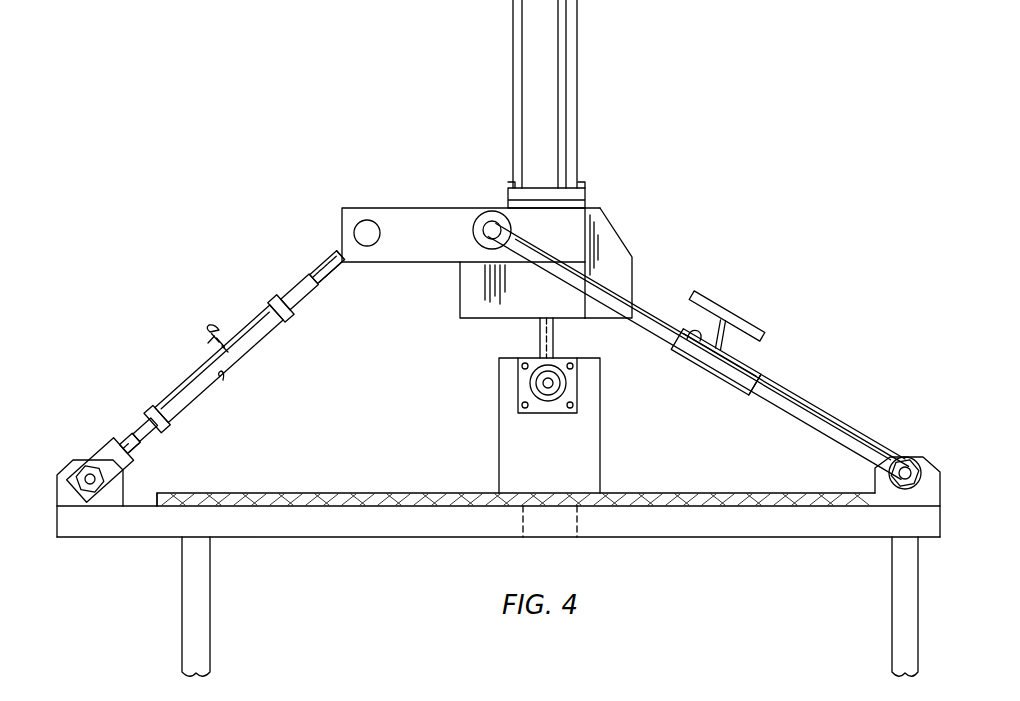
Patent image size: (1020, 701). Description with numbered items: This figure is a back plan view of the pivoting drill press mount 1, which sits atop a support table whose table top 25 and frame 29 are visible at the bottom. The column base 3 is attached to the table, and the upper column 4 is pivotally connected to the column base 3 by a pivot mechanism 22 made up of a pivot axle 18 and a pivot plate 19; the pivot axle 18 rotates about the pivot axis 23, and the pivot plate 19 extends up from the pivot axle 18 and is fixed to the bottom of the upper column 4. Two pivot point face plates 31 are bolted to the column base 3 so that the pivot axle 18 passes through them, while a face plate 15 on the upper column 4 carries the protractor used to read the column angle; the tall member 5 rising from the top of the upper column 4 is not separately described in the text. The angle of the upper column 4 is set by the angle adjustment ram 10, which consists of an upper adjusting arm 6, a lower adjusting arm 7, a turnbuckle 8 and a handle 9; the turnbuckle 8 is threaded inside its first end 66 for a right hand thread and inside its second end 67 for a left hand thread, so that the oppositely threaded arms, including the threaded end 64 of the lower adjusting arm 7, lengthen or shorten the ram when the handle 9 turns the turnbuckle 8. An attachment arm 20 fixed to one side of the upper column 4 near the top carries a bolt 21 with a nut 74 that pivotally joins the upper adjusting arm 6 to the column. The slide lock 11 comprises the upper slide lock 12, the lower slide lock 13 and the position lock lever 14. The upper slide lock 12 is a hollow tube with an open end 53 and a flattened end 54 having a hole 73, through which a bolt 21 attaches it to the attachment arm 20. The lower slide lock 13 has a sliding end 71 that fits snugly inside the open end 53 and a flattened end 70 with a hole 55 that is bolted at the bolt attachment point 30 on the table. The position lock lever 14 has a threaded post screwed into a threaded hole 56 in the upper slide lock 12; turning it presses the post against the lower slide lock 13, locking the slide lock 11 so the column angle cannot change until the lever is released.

The pivoting drill press mount 1 is at (774, 147).
The column base 3 is at (510, 466).
The upper column 4 is at (588, 240).
The column 5 is at (565, 70).
The upper adjusting arm 6 is at (328, 279).
The lower adjusting arm 7 is at (125, 480).
The turnbuckle 8 is at (248, 362).
The handle 9 is at (196, 340).
The angle adjustment ram 10 is at (165, 365).
The slide lock 11 is at (780, 378).
The upper slide lock 12 is at (712, 372).
The lower slide lock 13 is at (820, 428).
The position lock lever 14 is at (735, 315).
The face plate 15 is at (607, 271).
The pivot axle 18 is at (545, 383).
The pivot plate 19 is at (540, 346).
The attachment arm 20 is at (390, 208).
The bolt 21 is at (490, 221).
The pivot mechanism 22 is at (90, 466).
The pivot axis 23 is at (908, 456).
The table top 25 is at (328, 495).
The frame 29 is at (375, 525).
The bolt attachment point 30 is at (110, 520).
The pivot point face plate 31 is at (518, 401).
The open end 53 is at (750, 385).
The flattened end 54 is at (462, 276).
The hole 55 is at (888, 457).
The threaded hole 56 is at (665, 348).
The threaded end 64 is at (135, 418).
The first end 66 is at (320, 266).
The second end 67 is at (150, 460).
The flattened end 70 is at (876, 505).
The sliding end 71 is at (800, 395).
The hole 73 is at (473, 232).
The nut 74 is at (150, 500).